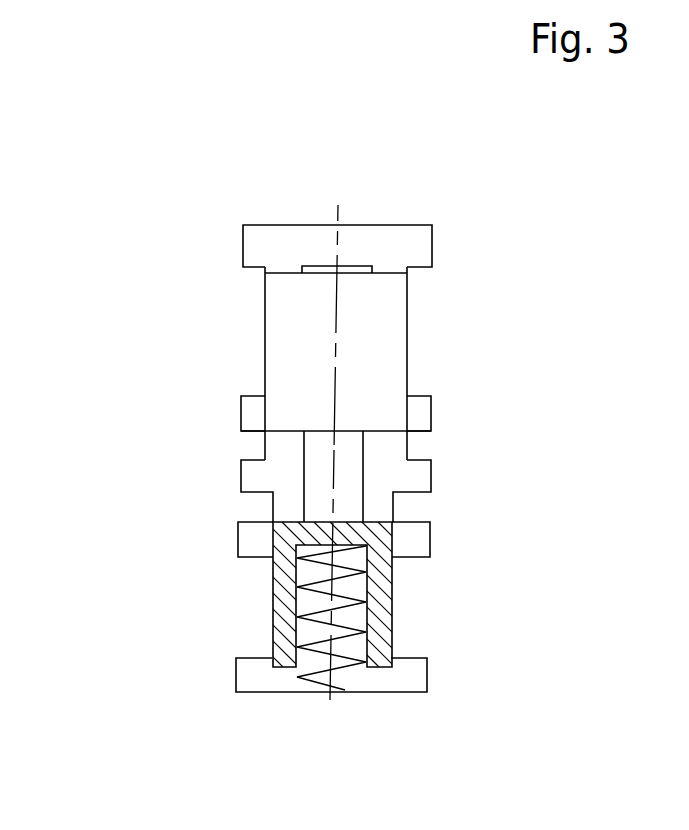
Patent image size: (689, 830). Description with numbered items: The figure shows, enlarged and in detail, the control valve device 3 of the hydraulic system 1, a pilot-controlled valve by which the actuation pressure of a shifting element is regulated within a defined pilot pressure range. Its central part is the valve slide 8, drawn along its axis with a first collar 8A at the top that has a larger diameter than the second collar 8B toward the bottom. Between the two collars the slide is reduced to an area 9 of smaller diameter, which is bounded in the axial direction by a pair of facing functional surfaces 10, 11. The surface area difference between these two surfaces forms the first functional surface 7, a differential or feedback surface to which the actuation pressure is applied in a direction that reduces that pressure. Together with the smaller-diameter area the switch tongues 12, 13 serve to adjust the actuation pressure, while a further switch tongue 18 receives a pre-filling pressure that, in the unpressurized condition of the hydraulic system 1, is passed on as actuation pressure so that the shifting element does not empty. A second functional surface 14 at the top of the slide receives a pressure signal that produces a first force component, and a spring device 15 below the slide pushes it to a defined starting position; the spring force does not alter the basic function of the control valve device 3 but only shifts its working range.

The hydraulic system 1 is at (487, 213).
The control valve device 3 is at (233, 303).
The first functional surface 7 is at (405, 448).
The valve slide 8 is at (300, 365).
The first collar 8A is at (370, 318).
The second collar 8B is at (292, 580).
The area of smaller diameter 9 is at (318, 480).
The functional surface 10 is at (283, 433).
The functional surface 11 is at (376, 520).
The switch tongue 12 is at (255, 540).
The switch tongue 13 is at (410, 473).
The second functional surface 14 is at (287, 272).
The spring device 15 is at (347, 673).
The further switch tongue 18 is at (417, 410).